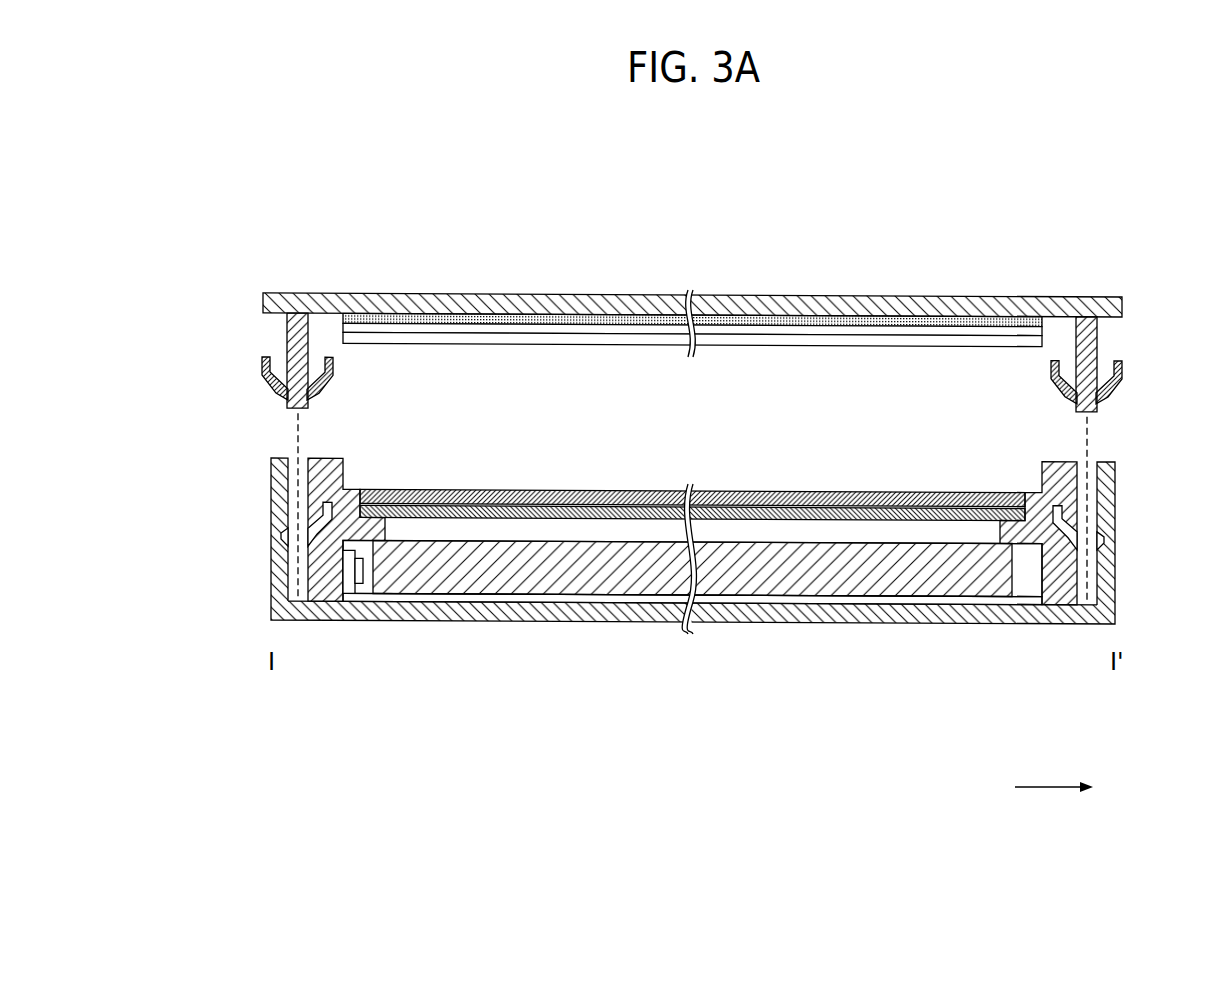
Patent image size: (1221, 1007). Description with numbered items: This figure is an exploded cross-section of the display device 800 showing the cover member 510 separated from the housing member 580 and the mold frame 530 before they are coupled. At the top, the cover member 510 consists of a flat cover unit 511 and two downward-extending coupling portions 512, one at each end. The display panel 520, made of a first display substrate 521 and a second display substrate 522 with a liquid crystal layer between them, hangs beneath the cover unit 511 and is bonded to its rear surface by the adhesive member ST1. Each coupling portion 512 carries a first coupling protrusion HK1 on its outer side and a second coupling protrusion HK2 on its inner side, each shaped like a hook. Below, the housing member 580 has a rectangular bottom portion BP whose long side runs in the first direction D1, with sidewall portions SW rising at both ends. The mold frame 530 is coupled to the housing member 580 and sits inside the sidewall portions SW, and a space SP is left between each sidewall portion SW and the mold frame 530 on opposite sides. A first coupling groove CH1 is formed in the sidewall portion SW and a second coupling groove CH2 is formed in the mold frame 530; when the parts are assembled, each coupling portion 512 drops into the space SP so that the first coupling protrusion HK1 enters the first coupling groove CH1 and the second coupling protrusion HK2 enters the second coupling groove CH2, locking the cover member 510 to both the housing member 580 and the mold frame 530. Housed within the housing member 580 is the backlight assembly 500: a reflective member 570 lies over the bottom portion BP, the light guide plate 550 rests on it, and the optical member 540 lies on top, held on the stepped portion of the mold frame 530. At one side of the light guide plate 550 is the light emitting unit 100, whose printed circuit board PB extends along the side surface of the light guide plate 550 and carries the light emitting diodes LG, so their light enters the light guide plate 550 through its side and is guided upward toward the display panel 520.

The display device 800 is at (1038, 180).
The cover member 510 is at (197, 292).
The cover unit 511 is at (272, 301).
The coupling portion 512 is at (296, 344).
The display panel 520 is at (455, 236).
The first display substrate 521 is at (378, 342).
The second display substrate 522 is at (435, 328).
The adhesive member ST1 is at (495, 318).
The first coupling protrusion HK1 is at (268, 376).
The second coupling protrusion HK2 is at (331, 375).
The space SP is at (297, 470).
The first coupling groove CH1 is at (287, 530).
The second coupling groove CH2 is at (322, 512).
The mold frame 530 is at (324, 558).
The sidewall portion SW is at (280, 580).
The bottom portion BP is at (312, 612).
The housing member 580 is at (200, 573).
The printed circuit board PB is at (351, 594).
The light emitting diode LG is at (363, 570).
The light emitting unit 100 is at (402, 682).
The reflective member 570 is at (443, 597).
The light guide plate 550 is at (515, 578).
The optical member 540 is at (588, 516).
The backlight assembly 500 is at (600, 723).
The first direction D1 is at (1066, 789).